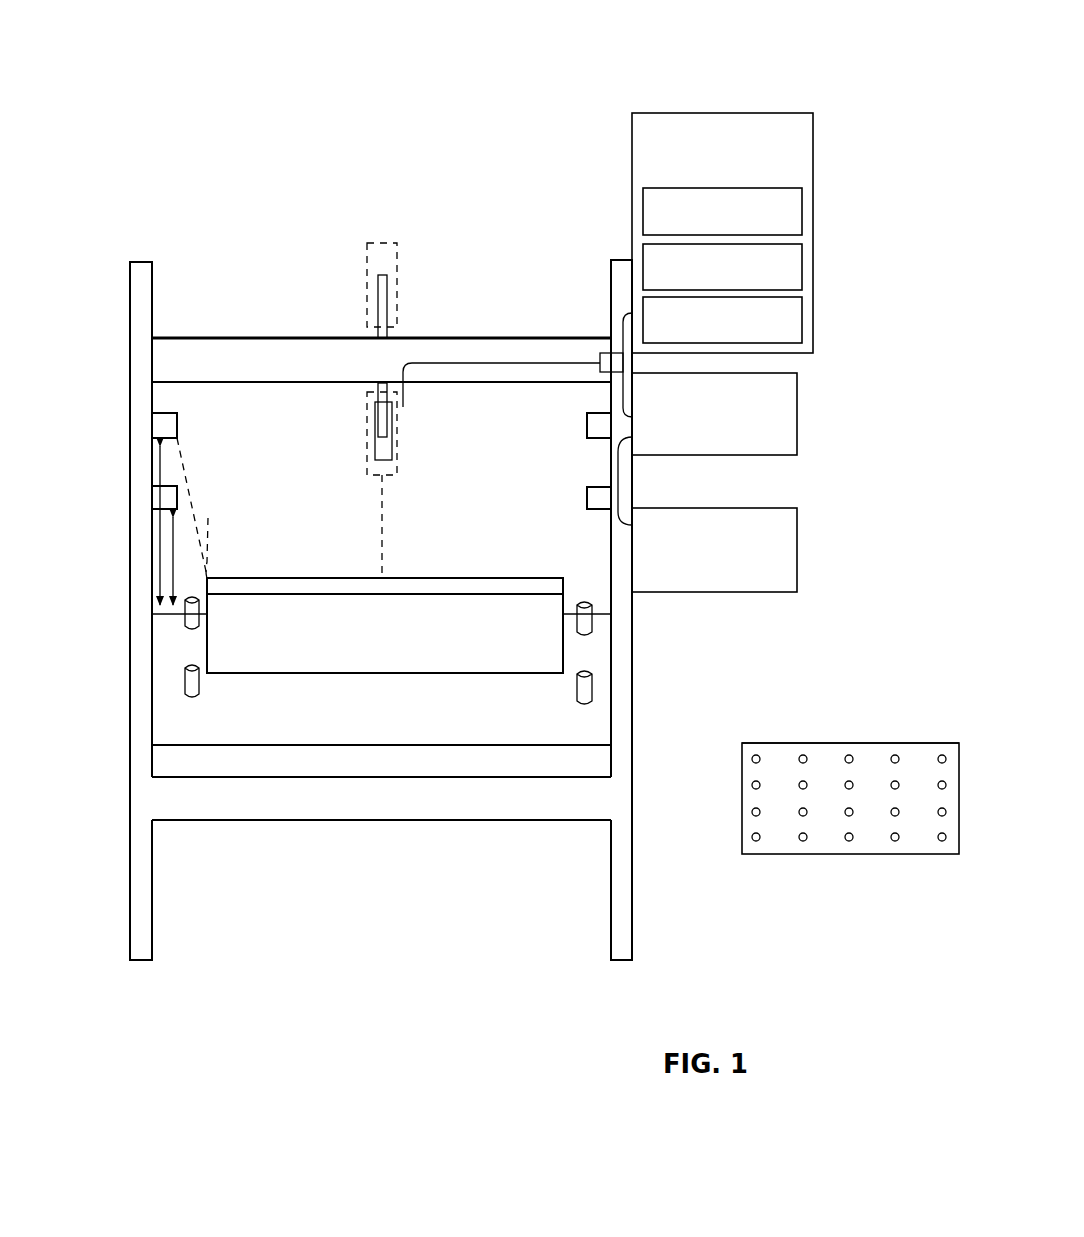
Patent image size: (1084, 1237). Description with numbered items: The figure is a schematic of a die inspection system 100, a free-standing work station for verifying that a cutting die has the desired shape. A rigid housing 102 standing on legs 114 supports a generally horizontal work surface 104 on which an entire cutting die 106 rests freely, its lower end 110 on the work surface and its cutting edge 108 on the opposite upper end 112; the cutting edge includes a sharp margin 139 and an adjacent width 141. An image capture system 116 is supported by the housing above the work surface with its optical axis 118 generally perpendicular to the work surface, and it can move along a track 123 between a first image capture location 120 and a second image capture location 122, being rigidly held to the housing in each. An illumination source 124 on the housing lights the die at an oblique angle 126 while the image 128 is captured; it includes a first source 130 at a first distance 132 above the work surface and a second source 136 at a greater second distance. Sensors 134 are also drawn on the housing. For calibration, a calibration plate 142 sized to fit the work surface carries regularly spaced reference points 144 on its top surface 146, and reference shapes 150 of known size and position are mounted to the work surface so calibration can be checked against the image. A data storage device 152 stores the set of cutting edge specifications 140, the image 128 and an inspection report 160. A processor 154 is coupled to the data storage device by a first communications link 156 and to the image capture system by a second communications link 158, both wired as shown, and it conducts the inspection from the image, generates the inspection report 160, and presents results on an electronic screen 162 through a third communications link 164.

The die inspection system 100 is at (847, 41).
The housing 102 is at (134, 262).
The work surface 104 is at (158, 717).
The cutting die 106 is at (403, 665).
The cutting edge 108 is at (302, 588).
The lower end 110 is at (560, 684).
The upper end 112 is at (575, 577).
The legs 114 is at (145, 892).
The image capture system 116 is at (372, 420).
The optical axis 118 is at (387, 515).
The first image capture location 120 is at (397, 460).
The second image capture location 122 is at (397, 262).
The track 123 is at (378, 313).
The illumination source 124 is at (118, 404).
The oblique angle 126 is at (180, 558).
The image 128 is at (802, 317).
The first source 130 is at (177, 498).
The first distance 132 is at (232, 540).
The upper sensors 134 is at (177, 425).
The second source 136 is at (156, 470).
The sharp margin 139 is at (480, 577).
The set of cutting edge specifications 140 is at (802, 263).
The adjacent width 141 is at (493, 586).
The calibration plate 142 is at (908, 742).
The reference points 144 is at (895, 841).
The top surface 146 is at (780, 752).
The reference shapes 150 is at (592, 618).
The data storage device 152 is at (814, 150).
The processor 154 is at (793, 422).
The first communications link 156 is at (623, 317).
The second communications link 158 is at (513, 361).
The inspection report 160 is at (802, 211).
The electronic screen 162 is at (797, 575).
The third communications link 164 is at (622, 500).